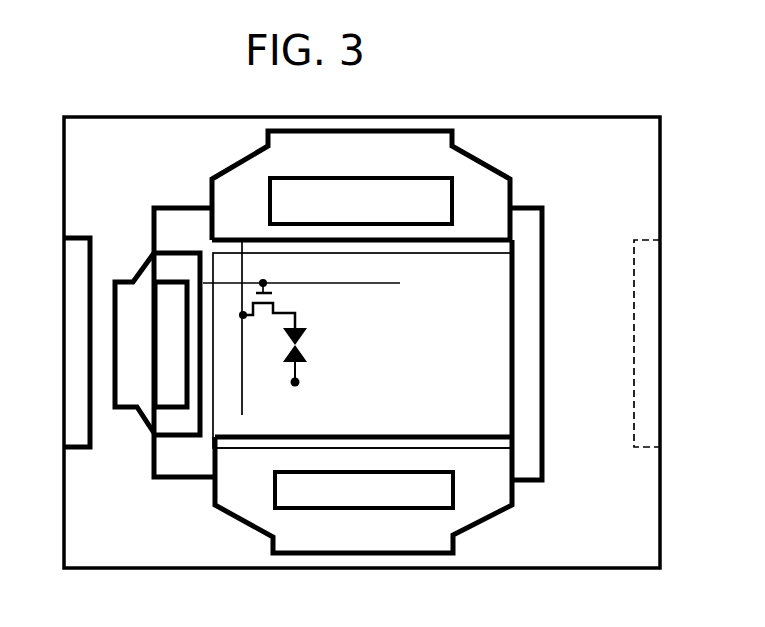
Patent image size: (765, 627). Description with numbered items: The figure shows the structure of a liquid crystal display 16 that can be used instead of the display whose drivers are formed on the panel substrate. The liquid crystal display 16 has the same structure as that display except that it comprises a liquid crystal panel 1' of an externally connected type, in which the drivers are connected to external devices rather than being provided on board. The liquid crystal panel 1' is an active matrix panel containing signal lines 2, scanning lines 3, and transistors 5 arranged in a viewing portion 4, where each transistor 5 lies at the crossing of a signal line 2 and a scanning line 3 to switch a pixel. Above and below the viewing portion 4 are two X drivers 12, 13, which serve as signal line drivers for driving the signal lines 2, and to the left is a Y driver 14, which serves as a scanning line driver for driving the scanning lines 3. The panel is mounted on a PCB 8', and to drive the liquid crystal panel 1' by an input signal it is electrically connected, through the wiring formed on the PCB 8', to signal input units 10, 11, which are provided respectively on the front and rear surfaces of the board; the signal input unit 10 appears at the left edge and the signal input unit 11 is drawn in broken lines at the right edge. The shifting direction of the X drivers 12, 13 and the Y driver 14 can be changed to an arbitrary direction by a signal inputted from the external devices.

The liquid crystal display 16 is at (642, 108).
The X driver 12 is at (438, 190).
The X driver 13 is at (423, 497).
The liquid crystal panel 1' is at (378, 344).
The Y driver 14 is at (170, 395).
The signal input unit 10 is at (83, 427).
The signal input unit 11 is at (649, 382).
The viewing portion 4 is at (515, 427).
The scanning line 3 is at (390, 285).
The signal line 2 is at (243, 405).
The transistor 5 is at (280, 305).
The PCB 8' is at (615, 594).